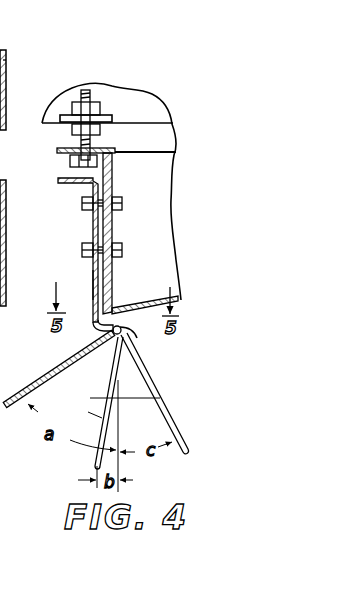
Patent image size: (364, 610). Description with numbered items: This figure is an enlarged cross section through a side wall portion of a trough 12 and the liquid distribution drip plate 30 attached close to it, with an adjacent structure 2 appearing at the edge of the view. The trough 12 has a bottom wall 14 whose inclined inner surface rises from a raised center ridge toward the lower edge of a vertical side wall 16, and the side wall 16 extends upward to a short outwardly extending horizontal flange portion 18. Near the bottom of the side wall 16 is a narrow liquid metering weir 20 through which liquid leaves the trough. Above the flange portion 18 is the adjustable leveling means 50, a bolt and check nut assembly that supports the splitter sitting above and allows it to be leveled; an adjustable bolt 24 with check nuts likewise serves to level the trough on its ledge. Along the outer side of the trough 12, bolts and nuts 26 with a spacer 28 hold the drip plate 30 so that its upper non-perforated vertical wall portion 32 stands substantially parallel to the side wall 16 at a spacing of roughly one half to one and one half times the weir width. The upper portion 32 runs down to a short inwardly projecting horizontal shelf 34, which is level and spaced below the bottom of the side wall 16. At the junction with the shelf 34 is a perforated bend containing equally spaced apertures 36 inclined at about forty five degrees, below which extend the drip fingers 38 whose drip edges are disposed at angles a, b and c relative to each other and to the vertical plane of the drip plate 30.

The wall 2 is at (5, 161).
The adjustable bolt 24 is at (5, 64).
The adjustable leveling means 50 is at (97, 108).
The trough 12 is at (118, 152).
The horizontal flange portion 18 is at (60, 146).
The side wall 16 is at (113, 180).
The bolts and nuts 26 is at (121, 204).
The upper vertical wall portion 32 is at (92, 214).
The liquid metering weir 20 is at (110, 232).
The spacer 28 is at (98, 230).
The liquid distribution drip plate 30 is at (92, 277).
The bottom wall 14 is at (157, 291).
The intermediate horizontal shelf 34 is at (97, 335).
The aperture 36 is at (138, 341).
The drip finger 38 is at (46, 384).